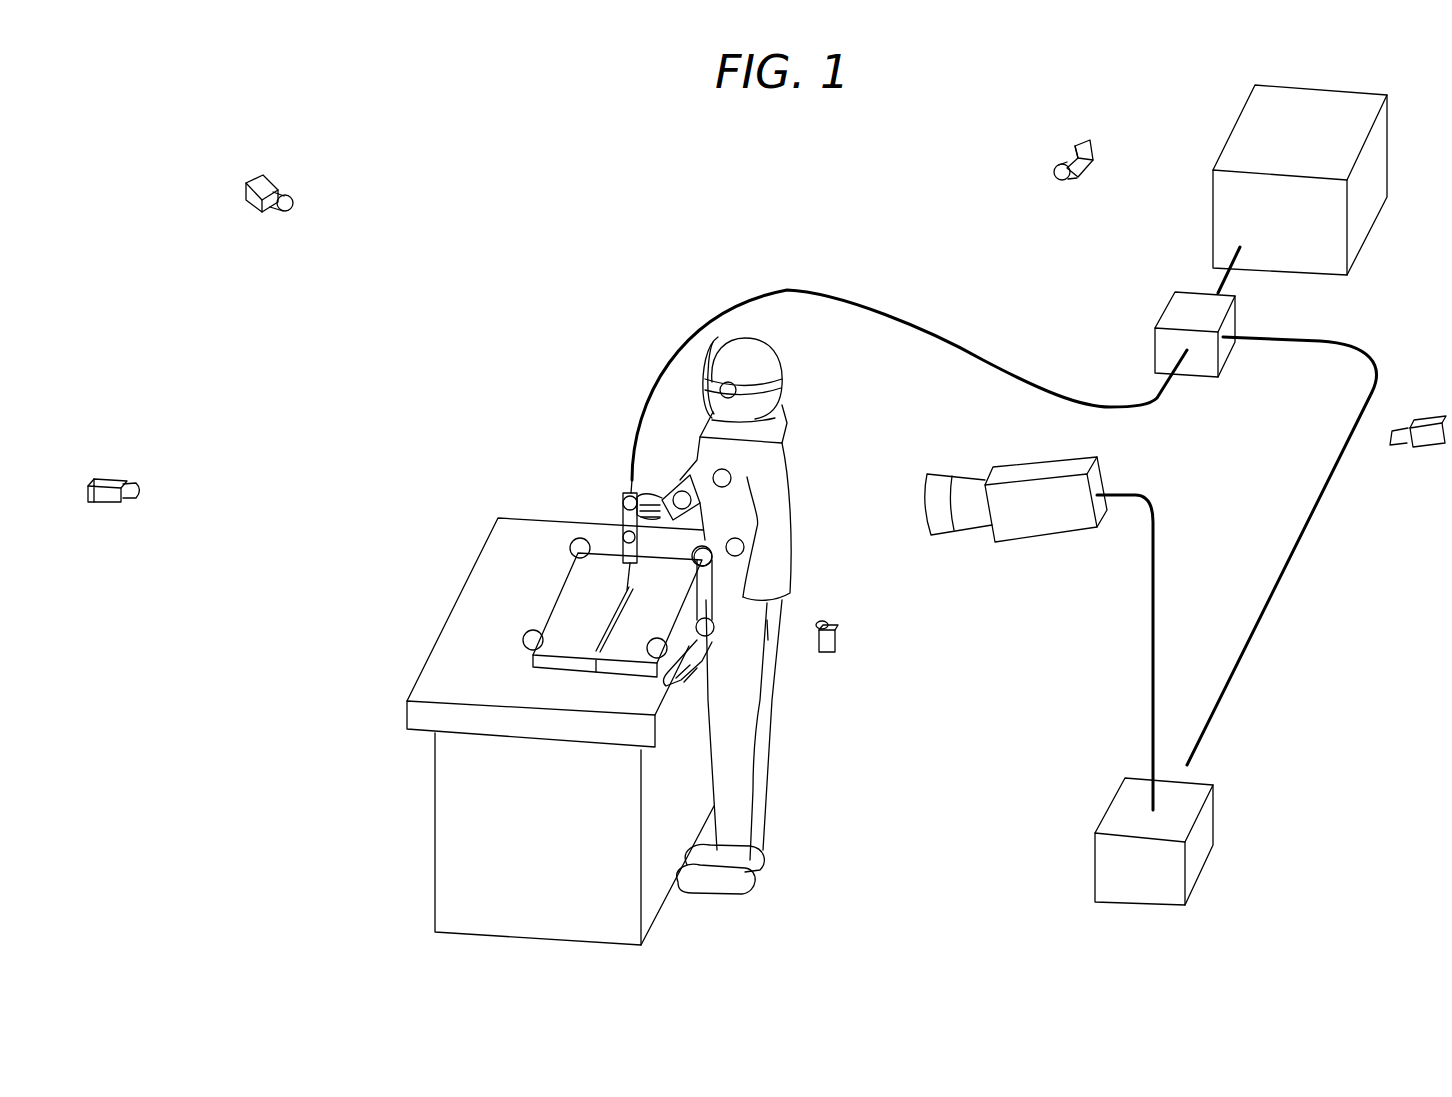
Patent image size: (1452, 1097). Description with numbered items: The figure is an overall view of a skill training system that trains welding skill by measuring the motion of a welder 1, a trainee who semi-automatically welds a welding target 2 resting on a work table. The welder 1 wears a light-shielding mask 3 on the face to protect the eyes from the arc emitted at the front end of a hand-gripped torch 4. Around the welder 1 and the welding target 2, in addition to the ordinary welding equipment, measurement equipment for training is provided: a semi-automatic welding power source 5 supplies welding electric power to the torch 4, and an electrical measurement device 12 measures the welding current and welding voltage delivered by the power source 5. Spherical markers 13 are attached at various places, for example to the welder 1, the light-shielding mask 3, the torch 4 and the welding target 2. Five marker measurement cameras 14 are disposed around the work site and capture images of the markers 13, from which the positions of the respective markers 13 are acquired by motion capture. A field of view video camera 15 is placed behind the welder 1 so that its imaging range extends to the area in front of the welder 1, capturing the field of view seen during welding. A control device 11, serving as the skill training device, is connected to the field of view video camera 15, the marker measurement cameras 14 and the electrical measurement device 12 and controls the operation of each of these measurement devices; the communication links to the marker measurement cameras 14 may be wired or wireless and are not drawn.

The welder 1 is at (815, 833).
The welding target 2 is at (517, 550).
The light-shielding mask 3 is at (700, 357).
The torch 4 is at (622, 504).
The semi-automatic welding power source 5 is at (1380, 162).
The control device 11 is at (1203, 832).
The electrical measurement device 12 is at (1182, 312).
The markers 13 is at (735, 478).
The marker measurement cameras 14 is at (267, 182).
The field of view video camera 15 is at (1048, 510).